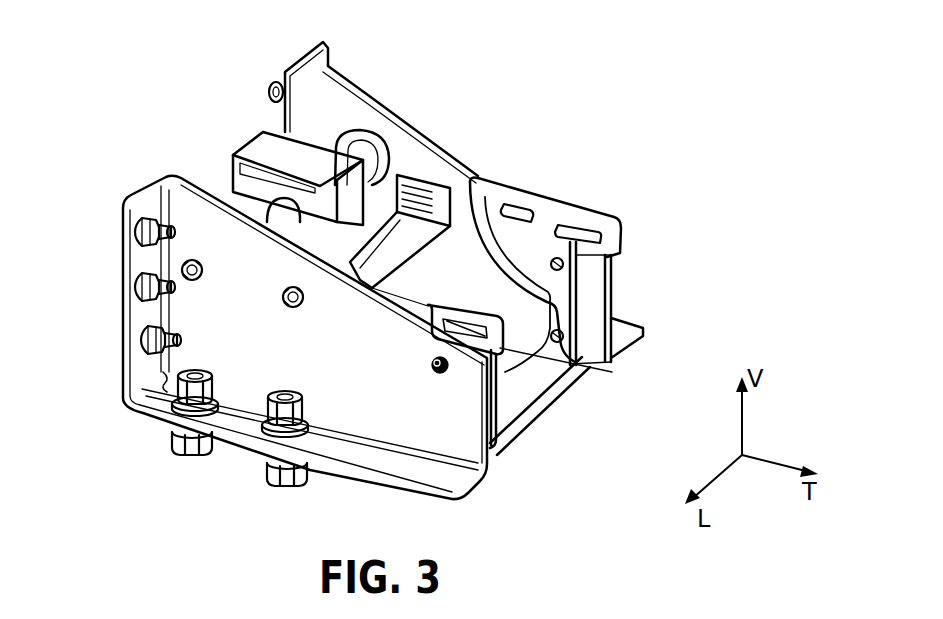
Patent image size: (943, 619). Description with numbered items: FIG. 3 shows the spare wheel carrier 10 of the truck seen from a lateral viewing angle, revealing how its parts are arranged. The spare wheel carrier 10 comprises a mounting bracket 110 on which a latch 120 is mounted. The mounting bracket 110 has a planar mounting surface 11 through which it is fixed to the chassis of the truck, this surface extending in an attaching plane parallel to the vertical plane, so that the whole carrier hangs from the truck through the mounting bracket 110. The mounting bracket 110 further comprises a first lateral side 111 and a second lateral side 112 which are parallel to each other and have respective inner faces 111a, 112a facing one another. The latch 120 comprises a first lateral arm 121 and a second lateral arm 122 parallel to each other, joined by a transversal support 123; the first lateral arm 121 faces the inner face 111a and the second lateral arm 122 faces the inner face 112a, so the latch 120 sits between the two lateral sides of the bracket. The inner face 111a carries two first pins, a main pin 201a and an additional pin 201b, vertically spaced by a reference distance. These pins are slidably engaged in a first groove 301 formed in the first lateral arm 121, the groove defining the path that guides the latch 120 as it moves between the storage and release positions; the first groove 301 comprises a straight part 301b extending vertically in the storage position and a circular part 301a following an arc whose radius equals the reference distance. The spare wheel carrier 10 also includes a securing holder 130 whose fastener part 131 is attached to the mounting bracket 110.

The spare wheel carrier 10 is at (605, 93).
The planar mounting surface 11 is at (122, 256).
The mounting bracket 110 is at (355, 405).
The first lateral side 111 is at (383, 128).
The inner face 111a is at (303, 118).
The second lateral side 112 is at (183, 316).
The inner face 112a is at (193, 178).
The latch 120 is at (523, 383).
The first lateral arm 121 is at (540, 218).
The second lateral arm 122 is at (495, 392).
The transversal support 123 is at (503, 397).
The securing holder 130 is at (308, 148).
The fastener part 131 is at (262, 187).
The main pin 201a is at (556, 333).
The additional pin 201b is at (566, 262).
The first groove 301 is at (565, 293).
The circular part 301a is at (505, 222).
The straight part 301b is at (567, 240).